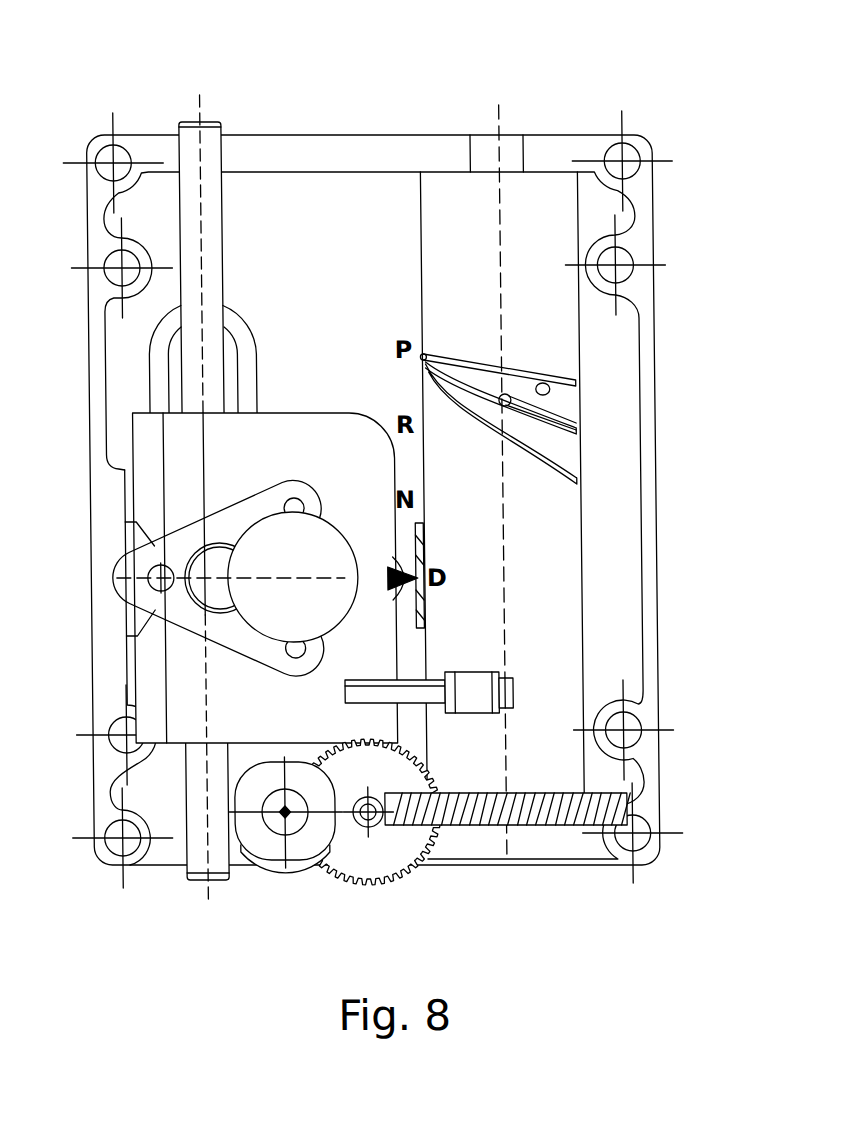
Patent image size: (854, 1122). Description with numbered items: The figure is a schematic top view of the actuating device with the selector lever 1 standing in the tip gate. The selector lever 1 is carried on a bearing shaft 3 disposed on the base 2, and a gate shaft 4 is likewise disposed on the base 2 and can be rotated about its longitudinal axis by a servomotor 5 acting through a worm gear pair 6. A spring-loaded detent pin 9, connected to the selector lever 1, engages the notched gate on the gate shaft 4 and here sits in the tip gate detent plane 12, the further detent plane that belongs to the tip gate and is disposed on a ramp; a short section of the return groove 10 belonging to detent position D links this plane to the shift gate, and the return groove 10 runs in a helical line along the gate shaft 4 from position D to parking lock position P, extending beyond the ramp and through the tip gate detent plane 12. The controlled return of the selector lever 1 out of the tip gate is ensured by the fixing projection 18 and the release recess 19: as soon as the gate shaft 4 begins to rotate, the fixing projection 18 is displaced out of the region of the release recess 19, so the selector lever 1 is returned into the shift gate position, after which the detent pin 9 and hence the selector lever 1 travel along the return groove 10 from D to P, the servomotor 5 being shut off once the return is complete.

The selector lever 1 is at (285, 543).
The base 2 is at (347, 155).
The bearing shaft 3 is at (198, 155).
The gate shaft 4 is at (529, 195).
The servomotor 5 is at (260, 843).
The worm gear pair 6 is at (505, 913).
The detent pin 9 is at (385, 578).
The return groove 10 is at (591, 482).
The tip gate detent plane 12 is at (417, 608).
The fixing projection 18 is at (369, 693).
The release recess 19 is at (461, 690).